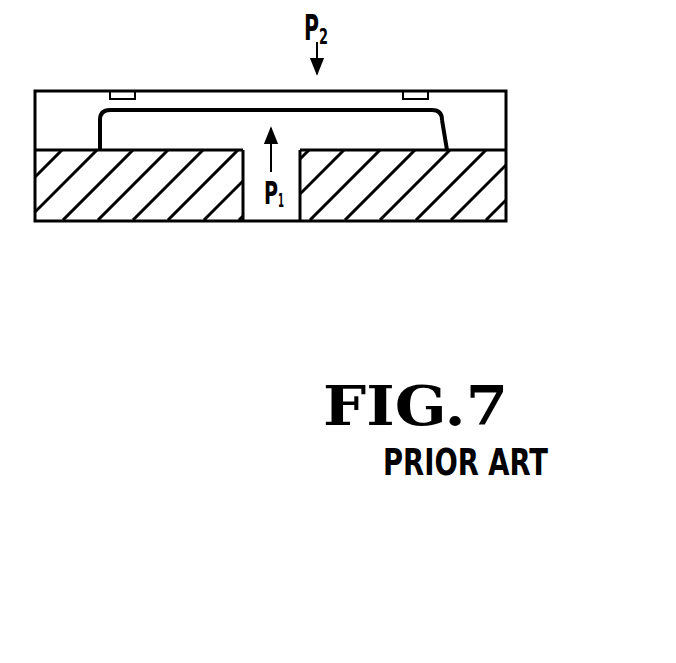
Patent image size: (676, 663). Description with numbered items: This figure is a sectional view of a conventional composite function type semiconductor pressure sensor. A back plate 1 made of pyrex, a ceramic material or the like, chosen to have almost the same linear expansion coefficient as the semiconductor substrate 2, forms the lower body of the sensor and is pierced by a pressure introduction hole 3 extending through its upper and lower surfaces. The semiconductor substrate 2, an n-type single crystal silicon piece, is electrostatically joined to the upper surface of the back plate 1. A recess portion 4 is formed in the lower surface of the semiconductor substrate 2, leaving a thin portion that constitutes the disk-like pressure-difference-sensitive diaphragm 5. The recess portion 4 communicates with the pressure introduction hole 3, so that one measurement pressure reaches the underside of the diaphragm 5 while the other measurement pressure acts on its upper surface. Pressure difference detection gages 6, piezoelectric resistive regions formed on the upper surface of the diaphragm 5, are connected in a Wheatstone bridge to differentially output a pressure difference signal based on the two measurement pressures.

The back plate 1 is at (509, 178).
The semiconductor substrate 2 is at (509, 108).
The pressure introduction hole 3 is at (245, 160).
The recess portion 4 is at (103, 127).
The pressure-difference-sensitive diaphragm 5 is at (186, 106).
The pressure difference detection gage 6 is at (122, 90).